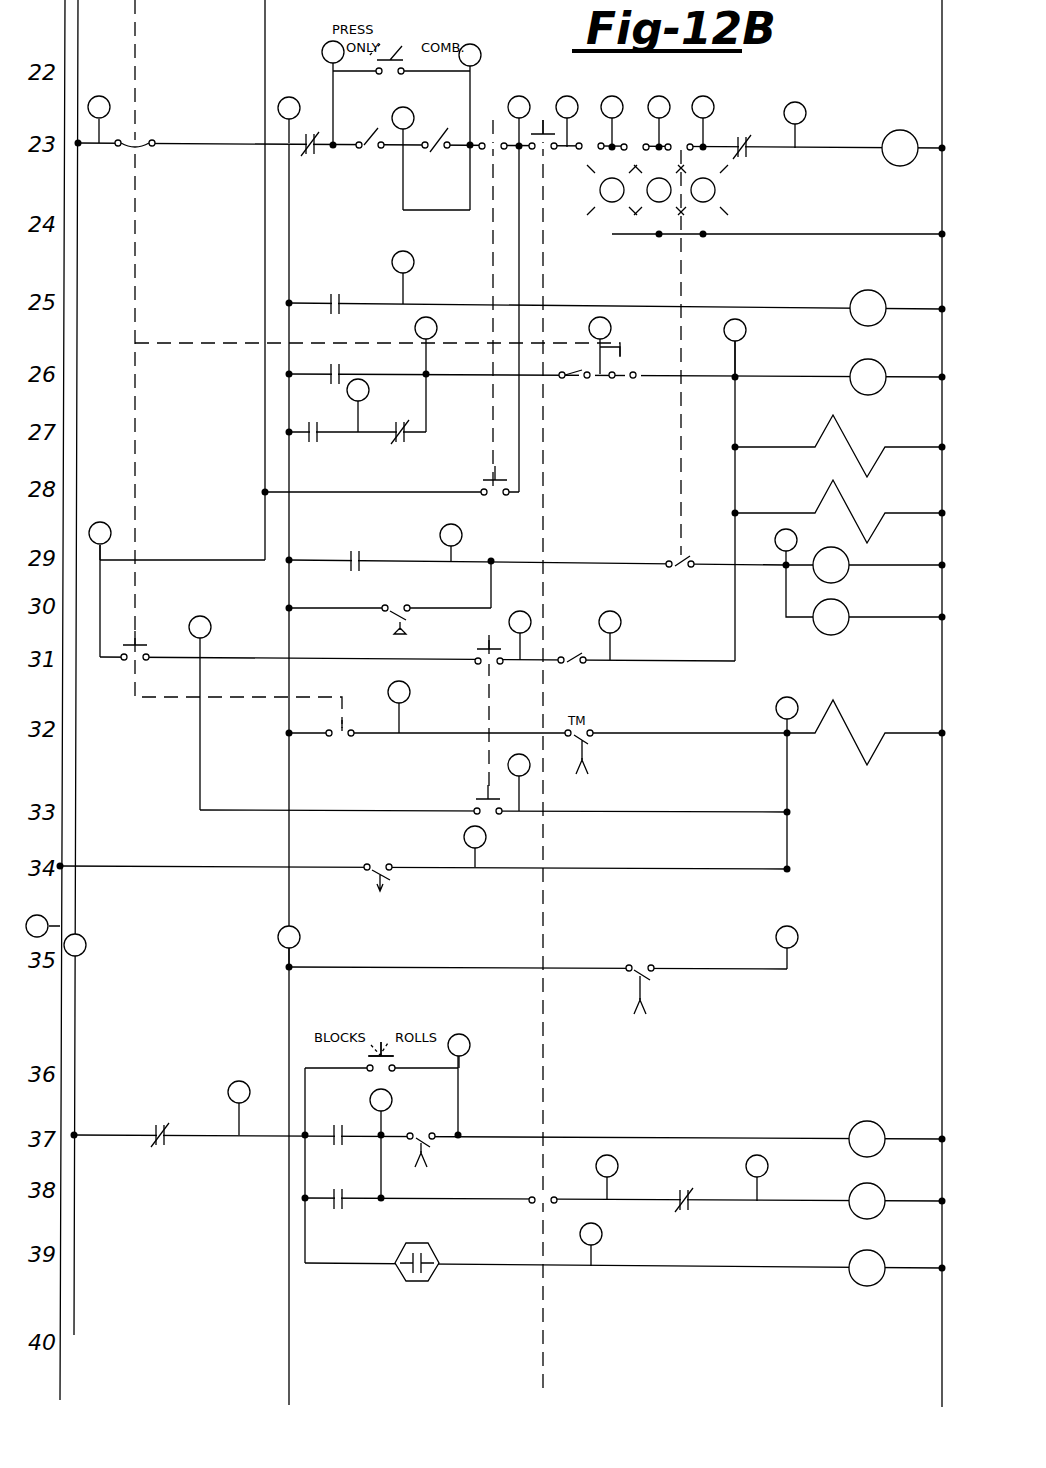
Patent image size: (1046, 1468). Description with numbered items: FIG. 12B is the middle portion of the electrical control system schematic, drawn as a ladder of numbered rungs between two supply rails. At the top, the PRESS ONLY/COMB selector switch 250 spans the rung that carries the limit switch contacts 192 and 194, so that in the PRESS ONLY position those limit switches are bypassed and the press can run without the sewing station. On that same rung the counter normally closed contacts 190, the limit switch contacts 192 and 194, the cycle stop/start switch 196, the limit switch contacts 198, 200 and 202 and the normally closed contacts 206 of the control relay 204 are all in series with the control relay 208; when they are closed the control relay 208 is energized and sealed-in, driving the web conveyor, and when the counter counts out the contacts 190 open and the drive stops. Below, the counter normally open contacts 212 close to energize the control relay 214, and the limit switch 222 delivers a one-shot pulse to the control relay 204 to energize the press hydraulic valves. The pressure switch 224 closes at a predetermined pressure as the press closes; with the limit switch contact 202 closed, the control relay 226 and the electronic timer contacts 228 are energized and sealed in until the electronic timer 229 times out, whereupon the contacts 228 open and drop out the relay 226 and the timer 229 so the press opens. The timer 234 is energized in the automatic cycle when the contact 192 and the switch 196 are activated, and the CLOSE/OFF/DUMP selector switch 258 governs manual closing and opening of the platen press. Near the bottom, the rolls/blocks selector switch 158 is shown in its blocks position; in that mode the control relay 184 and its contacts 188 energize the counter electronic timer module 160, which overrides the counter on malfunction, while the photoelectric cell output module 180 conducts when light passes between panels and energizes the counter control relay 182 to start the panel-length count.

The rolls/blocks selector switch 158 is at (380, 1052).
The counter electronic timer module 160 is at (878, 1188).
The photoelectric cell output module 180 is at (436, 1256).
The counter control relay 182 is at (876, 1254).
The control relay 184 is at (876, 1124).
The control relay contacts 188 is at (345, 1205).
The counter normally closed contacts 190 is at (316, 150).
The limit switch contacts 192 is at (392, 100).
The limit switch contacts 194 is at (462, 100).
The cycle stop/start switch 196 is at (542, 132).
The limit switch contacts 198 is at (585, 140).
The limit switch contacts 200 is at (634, 142).
The limit switch contact 202 is at (686, 142).
The control relay 204 is at (880, 366).
The normally closed contacts 206 is at (748, 140).
The control relay 208 is at (926, 108).
The counter normally open contacts 212 is at (338, 298).
The control relay 214 is at (880, 294).
The limit switch 222 is at (582, 380).
The pressure switch 224 is at (410, 606).
The control relay 226 is at (848, 562).
The electronic timer contacts 228 is at (590, 744).
The electronic timer 229 is at (848, 616).
The timer 234 is at (376, 878).
The PRESS ONLY/COMB selector switch 250 is at (394, 60).
The CLOSE/OFF/DUMP selector switch 258 is at (485, 668).